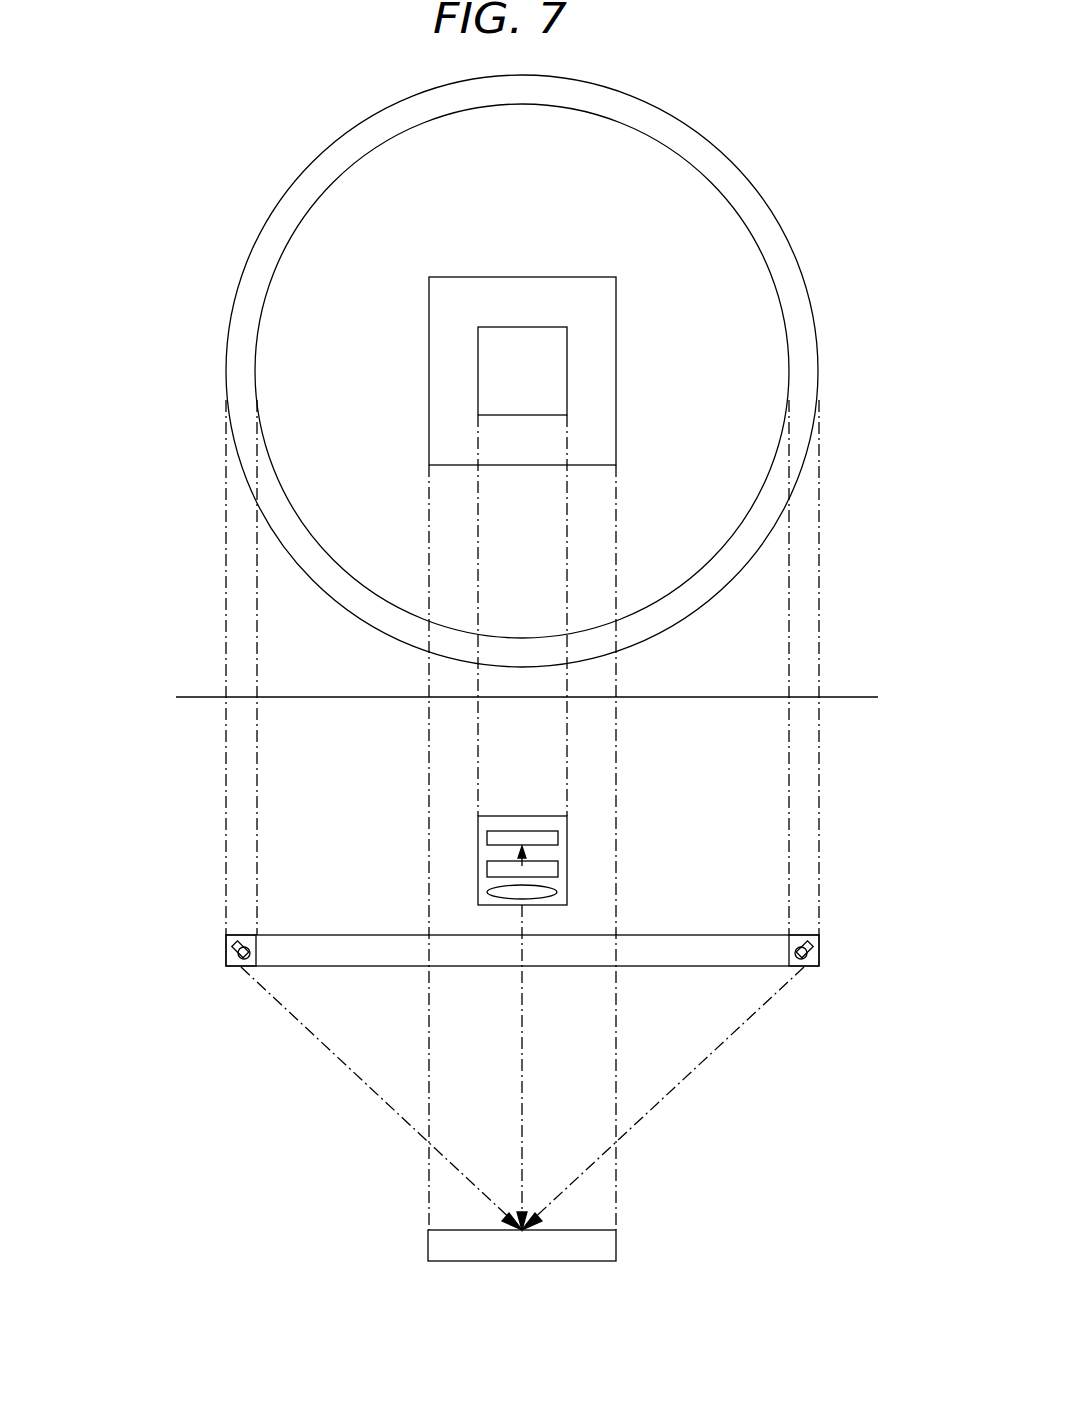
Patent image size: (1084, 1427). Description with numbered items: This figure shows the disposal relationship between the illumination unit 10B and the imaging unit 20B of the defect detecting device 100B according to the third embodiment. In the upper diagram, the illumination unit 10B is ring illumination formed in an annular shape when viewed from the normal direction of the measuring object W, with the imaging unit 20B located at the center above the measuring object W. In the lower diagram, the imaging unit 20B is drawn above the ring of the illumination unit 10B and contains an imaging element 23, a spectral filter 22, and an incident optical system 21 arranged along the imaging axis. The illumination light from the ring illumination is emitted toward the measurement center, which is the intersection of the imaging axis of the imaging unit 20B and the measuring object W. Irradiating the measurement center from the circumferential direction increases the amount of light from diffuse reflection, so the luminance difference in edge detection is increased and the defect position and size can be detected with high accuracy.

The defect detecting device 100B is at (803, 155).
The illumination unit 10B is at (800, 265).
The imaging unit 20B is at (567, 352).
The measuring object W is at (616, 437).
The imaging element 23 is at (487, 840).
The spectral filter 22 is at (558, 870).
The incident optical system 21 is at (555, 888).